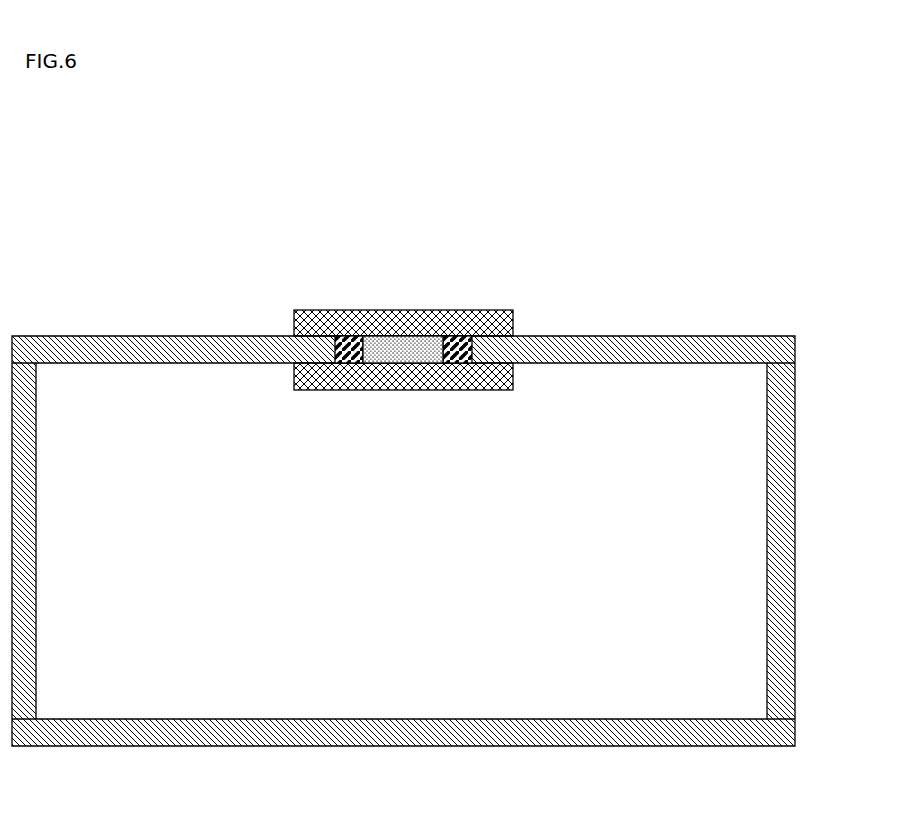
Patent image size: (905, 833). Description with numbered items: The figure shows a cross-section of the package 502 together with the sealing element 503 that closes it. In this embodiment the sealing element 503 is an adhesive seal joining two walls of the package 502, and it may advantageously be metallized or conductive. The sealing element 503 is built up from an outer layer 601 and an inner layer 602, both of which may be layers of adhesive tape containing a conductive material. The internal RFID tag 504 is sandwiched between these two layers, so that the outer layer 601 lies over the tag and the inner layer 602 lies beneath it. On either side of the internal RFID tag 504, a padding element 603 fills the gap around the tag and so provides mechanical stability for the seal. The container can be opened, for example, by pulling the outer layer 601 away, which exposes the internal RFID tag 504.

The package 502 is at (178, 337).
The sealing element 503 is at (420, 278).
The internal RFID tag 504 is at (388, 350).
The outer layer 601 is at (412, 320).
The inner layer 602 is at (471, 377).
The padding element 603 is at (443, 353).